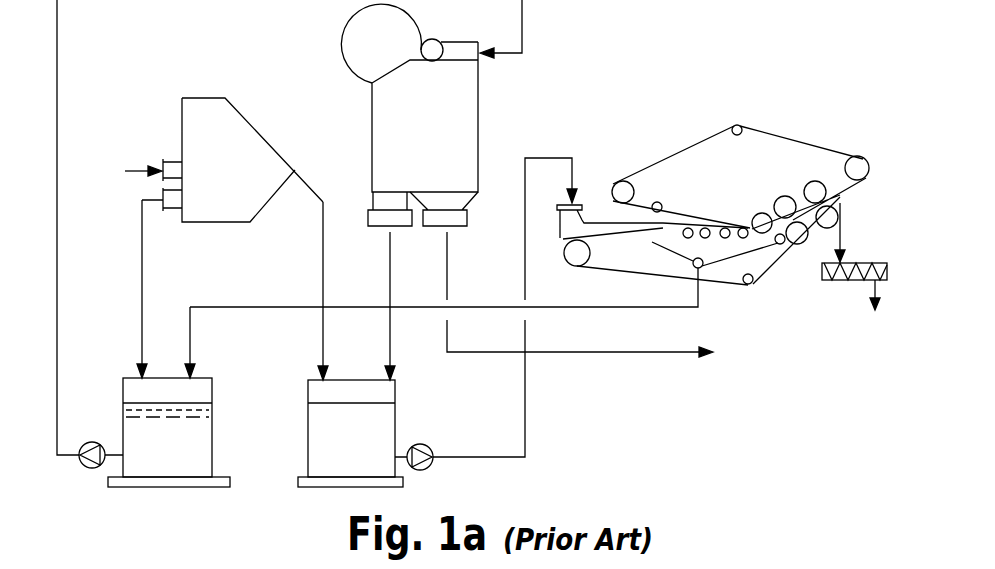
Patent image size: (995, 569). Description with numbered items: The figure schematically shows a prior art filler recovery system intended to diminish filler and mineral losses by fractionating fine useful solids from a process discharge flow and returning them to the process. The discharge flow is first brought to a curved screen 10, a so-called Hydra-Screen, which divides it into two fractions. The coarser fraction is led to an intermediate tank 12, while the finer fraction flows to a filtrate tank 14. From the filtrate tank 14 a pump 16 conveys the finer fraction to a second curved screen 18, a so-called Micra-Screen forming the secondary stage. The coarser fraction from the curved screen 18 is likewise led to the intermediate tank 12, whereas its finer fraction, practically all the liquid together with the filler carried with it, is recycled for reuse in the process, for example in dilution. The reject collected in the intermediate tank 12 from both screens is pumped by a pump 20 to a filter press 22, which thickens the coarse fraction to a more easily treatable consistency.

The curved screen 10 is at (208, 110).
The intermediate tank 12 is at (325, 443).
The filtrate tank 14 is at (193, 390).
The pump 16 is at (83, 468).
The curved screen 18 is at (463, 113).
The pump 20 is at (423, 444).
The filter press 22 is at (770, 155).